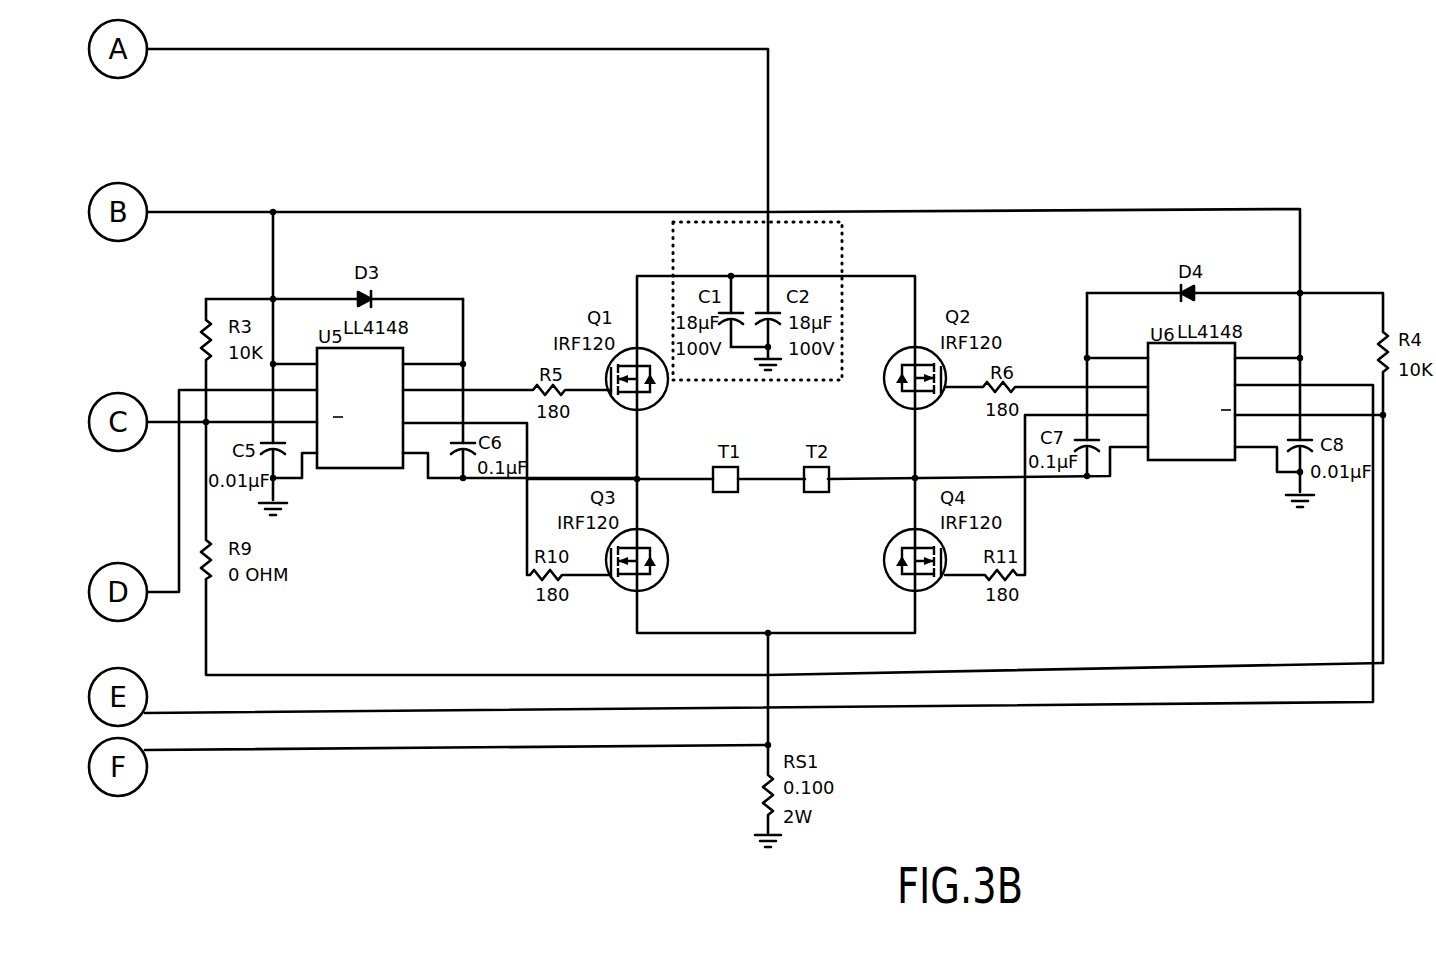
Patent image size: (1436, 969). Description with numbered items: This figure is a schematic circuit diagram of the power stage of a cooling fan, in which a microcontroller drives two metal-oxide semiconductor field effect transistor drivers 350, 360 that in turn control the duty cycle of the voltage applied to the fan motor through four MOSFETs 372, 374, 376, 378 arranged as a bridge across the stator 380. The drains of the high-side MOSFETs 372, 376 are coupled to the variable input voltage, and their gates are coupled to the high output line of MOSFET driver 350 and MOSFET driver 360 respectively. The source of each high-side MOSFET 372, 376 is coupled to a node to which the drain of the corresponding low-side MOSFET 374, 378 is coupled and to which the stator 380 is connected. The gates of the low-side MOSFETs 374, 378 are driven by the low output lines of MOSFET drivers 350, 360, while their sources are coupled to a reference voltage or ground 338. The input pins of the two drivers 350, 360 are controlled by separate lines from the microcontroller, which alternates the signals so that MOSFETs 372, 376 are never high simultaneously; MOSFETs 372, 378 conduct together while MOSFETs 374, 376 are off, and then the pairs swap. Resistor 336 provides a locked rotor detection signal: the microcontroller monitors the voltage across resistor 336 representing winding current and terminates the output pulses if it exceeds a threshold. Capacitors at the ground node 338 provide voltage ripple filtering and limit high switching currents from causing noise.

The resistor 336 is at (862, 785).
The ground 338 is at (757, 550).
The MOSFET driver 350 is at (360, 436).
The MOSFET driver 360 is at (1192, 431).
The MOSFET 372 is at (660, 391).
The MOSFET 374 is at (655, 574).
The MOSFET 376 is at (899, 369).
The MOSFET 378 is at (899, 574).
The stator 380 is at (771, 474).